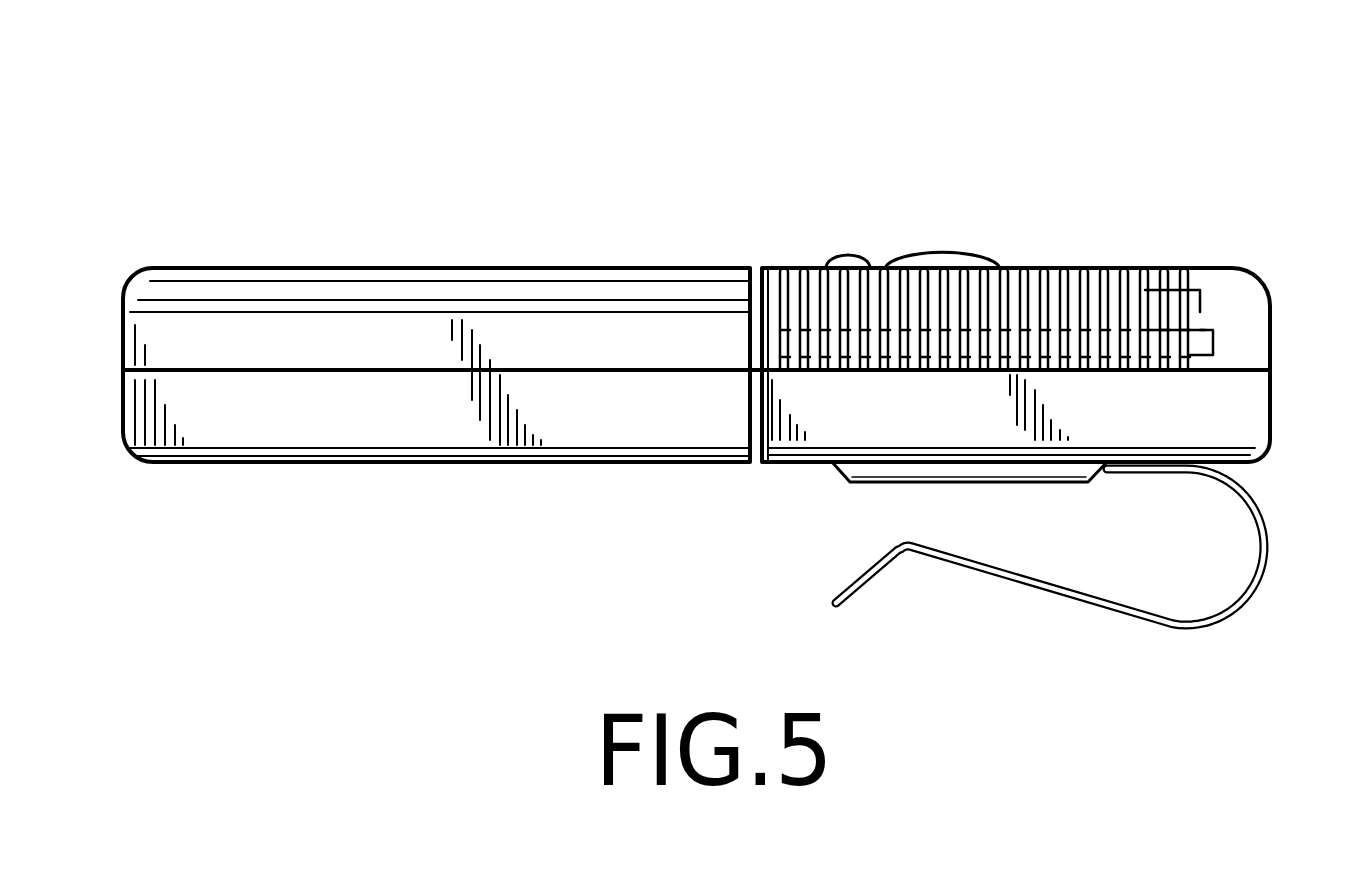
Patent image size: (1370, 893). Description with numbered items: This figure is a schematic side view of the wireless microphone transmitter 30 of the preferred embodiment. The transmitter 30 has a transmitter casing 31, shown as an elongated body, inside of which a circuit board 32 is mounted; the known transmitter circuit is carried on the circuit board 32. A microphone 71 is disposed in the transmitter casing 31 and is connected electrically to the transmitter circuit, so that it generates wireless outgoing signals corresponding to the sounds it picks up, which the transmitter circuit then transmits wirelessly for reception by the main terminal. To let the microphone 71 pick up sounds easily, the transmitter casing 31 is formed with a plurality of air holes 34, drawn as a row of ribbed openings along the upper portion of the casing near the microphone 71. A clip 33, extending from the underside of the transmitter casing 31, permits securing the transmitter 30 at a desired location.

The wireless microphone transmitter 30 is at (1009, 172).
The transmitter casing 31 is at (1243, 403).
The circuit board 32 is at (1215, 336).
The clip 33 is at (1263, 521).
The air holes 34 is at (1187, 267).
The microphone 71 is at (1203, 293).